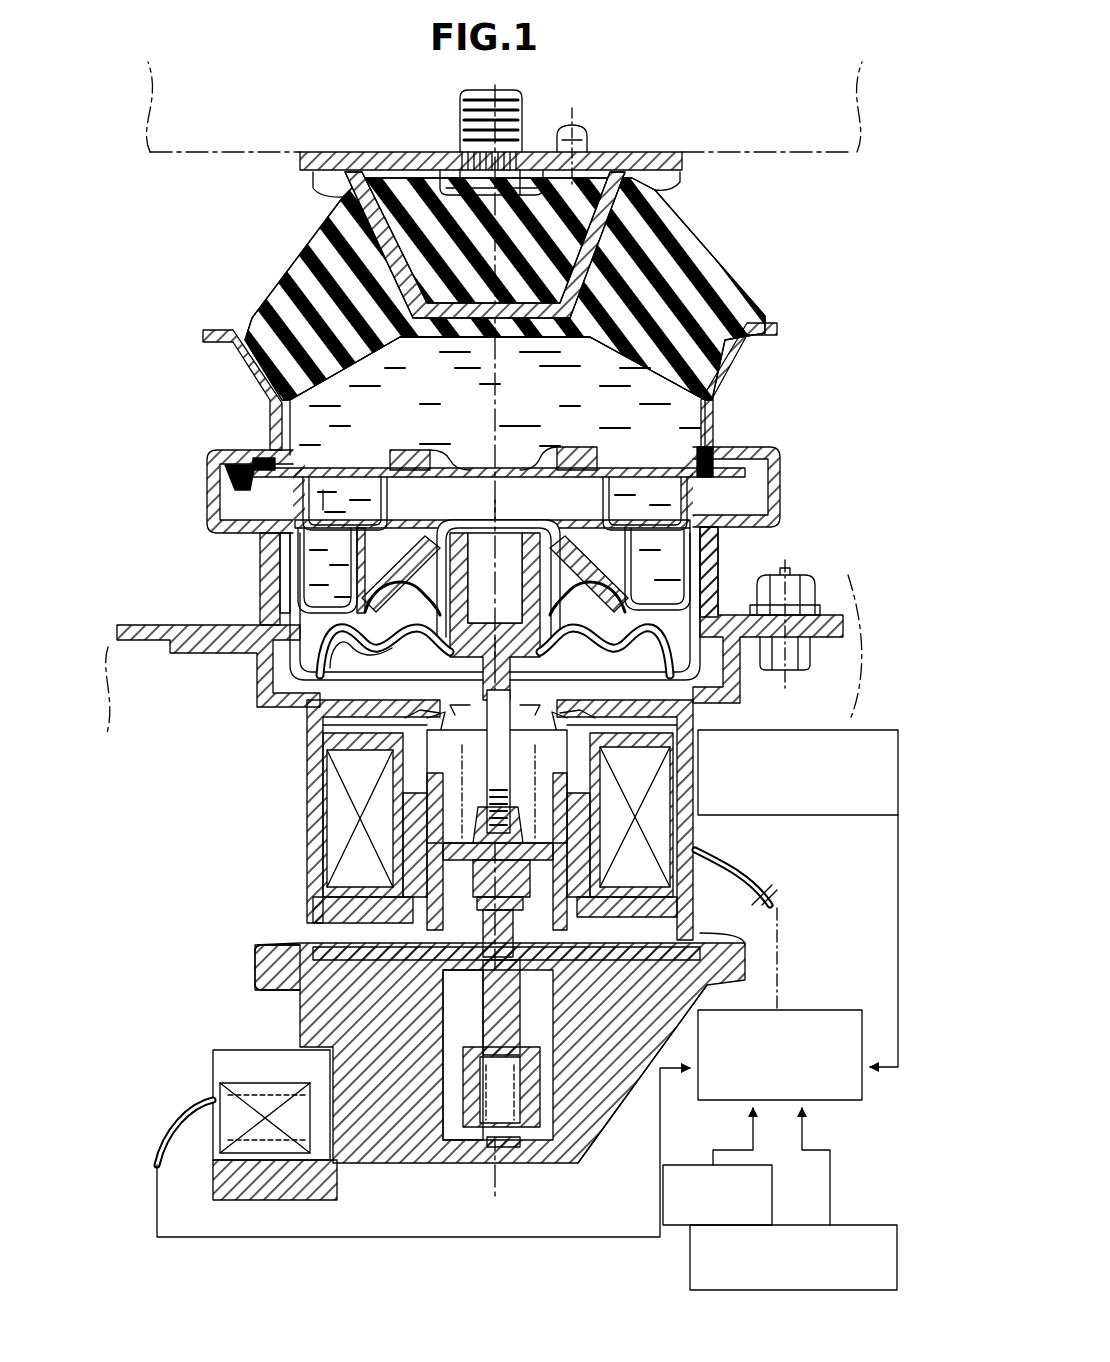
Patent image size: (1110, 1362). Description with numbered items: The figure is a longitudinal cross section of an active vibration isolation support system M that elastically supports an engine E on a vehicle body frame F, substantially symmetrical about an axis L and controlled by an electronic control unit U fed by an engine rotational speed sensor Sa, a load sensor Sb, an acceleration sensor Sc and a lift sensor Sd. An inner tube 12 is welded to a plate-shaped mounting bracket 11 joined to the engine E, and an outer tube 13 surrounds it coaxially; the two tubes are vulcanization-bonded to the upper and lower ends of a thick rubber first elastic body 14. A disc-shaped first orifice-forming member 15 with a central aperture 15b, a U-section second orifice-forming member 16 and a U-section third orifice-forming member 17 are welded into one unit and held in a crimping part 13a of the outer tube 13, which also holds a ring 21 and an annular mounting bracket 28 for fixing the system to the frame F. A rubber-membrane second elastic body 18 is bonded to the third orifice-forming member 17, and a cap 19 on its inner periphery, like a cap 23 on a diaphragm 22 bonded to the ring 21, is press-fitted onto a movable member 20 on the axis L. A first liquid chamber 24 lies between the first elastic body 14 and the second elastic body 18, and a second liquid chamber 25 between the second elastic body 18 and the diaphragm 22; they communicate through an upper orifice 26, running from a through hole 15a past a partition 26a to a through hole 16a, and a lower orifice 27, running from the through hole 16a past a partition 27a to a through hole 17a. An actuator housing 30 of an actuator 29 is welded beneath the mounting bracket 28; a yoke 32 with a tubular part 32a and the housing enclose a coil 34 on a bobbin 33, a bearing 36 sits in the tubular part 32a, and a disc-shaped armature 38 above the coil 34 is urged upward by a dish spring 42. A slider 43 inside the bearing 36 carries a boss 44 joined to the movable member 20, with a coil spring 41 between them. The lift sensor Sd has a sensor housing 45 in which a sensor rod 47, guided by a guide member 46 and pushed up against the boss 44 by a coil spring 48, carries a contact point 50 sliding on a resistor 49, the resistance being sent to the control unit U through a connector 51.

The mounting bracket 11 is at (658, 152).
The inner tube 12 is at (403, 240).
The outer tube 13 is at (247, 378).
The crimping part 13a is at (207, 462).
The first elastic body 14 is at (293, 267).
The first orifice-forming member 15 is at (407, 447).
The through hole 15a is at (653, 467).
The aperture 15b is at (467, 453).
The second orifice-forming member 16 is at (327, 528).
The through hole 16a is at (667, 520).
The third orifice-forming member 17 is at (323, 607).
The through hole 17a is at (659, 569).
The second elastic body 18 is at (387, 567).
The cap 19 is at (513, 520).
The movable member 20 is at (447, 663).
The ring 21 is at (228, 480).
The diaphragm 22 is at (390, 650).
The cap 23 is at (433, 603).
The first liquid chamber 24 is at (497, 396).
The second liquid chamber 25 is at (563, 603).
The upper orifice 26 is at (323, 490).
The partition 26a is at (620, 477).
The lower orifice 27 is at (320, 553).
The partition 27a is at (677, 577).
The mounting bracket 28 is at (197, 626).
The actuator 29 is at (409, 800).
The actuator housing 30 is at (303, 767).
The yoke 32 is at (633, 920).
The tubular part 32a is at (583, 820).
The bobbin 33 is at (333, 883).
The coil 34 is at (333, 827).
The bearing 36 is at (520, 700).
The armature 38 is at (610, 697).
The coil spring 41 is at (543, 700).
The dish spring 42 is at (383, 727).
The slider 43 is at (580, 950).
The boss 44 is at (553, 883).
The sensor housing 45 is at (347, 1023).
The guide member 46 is at (313, 943).
The sensor rod 47 is at (513, 1020).
The coil spring 48 is at (527, 1140).
The resistor 49 is at (443, 1133).
The contact point 50 is at (463, 1057).
The connector 51 is at (247, 1087).
The axis L is at (497, 208).
The engine E is at (760, 152).
The active vibration isolation support system M is at (772, 393).
The vehicle body frame F is at (769, 615).
The engine rotational speed sensor Sa is at (813, 747).
The load sensor Sb is at (703, 1165).
The acceleration sensor Sc is at (860, 1225).
The lift sensor Sd is at (420, 1165).
The electronic control unit U is at (822, 1010).